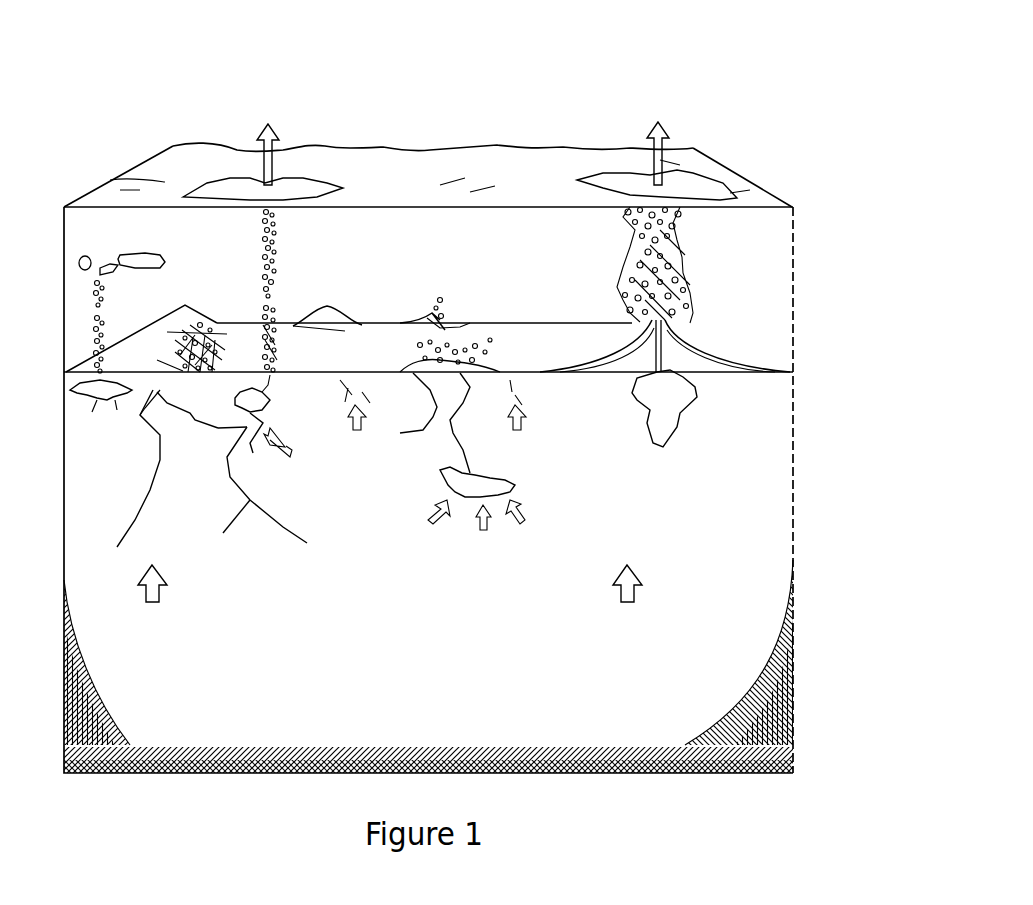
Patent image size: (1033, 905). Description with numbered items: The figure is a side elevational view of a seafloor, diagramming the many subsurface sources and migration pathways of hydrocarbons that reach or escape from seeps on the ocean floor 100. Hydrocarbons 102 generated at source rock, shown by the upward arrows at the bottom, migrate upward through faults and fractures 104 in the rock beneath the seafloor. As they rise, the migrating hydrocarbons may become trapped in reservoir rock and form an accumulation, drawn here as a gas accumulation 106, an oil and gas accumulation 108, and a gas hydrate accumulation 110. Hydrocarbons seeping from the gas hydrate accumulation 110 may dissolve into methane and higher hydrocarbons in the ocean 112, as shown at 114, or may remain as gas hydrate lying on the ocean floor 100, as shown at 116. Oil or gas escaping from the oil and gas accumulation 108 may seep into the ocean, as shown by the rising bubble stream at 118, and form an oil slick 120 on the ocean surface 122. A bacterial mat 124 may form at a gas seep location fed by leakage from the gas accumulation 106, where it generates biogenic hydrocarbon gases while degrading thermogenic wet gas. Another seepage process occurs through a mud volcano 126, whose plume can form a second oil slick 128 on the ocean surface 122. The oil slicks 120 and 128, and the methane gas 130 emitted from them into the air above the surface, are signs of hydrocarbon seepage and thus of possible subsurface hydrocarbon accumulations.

The ocean floor 100 is at (605, 62).
The hydrocarbons 102 is at (162, 594).
The faults and fractures 104 is at (240, 488).
The gas accumulation 106 is at (504, 479).
The oil and gas accumulation 108 is at (268, 404).
The gas hydrate accumulation 110 is at (94, 401).
The ocean 112 is at (509, 261).
The dissolved methane and higher hydrocarbons 114 is at (158, 257).
The gas hydrate on the ocean floor 116 is at (167, 360).
The oil or gas seep 118 is at (270, 285).
The oil slick 120 is at (303, 180).
The ocean surface 122 is at (127, 182).
The bacterial mat 124 is at (480, 366).
The mud volcano 126 is at (648, 419).
The oil slick 128 is at (703, 193).
The methane gas 130 is at (260, 133).